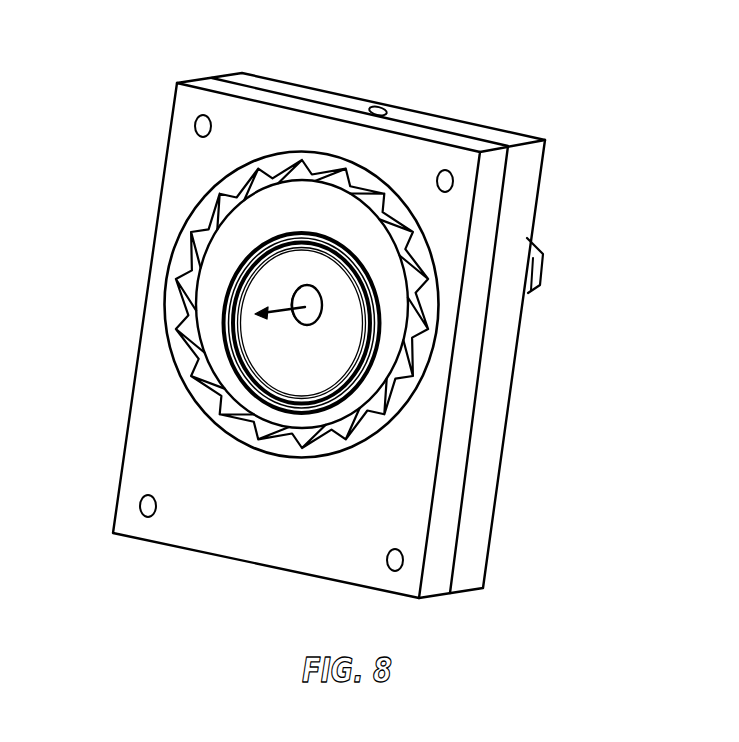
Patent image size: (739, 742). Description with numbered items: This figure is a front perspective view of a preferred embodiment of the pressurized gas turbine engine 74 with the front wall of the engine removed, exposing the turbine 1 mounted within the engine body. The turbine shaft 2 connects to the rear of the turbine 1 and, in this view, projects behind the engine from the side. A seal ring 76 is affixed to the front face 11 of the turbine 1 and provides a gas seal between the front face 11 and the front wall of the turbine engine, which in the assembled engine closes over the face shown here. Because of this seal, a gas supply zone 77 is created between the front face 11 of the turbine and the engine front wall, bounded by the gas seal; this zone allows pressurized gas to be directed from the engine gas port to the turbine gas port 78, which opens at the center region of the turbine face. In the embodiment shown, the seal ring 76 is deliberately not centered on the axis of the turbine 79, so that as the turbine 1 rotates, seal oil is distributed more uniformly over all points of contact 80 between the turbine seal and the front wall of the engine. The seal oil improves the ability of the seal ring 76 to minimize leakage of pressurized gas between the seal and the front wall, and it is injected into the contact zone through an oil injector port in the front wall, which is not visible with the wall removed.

The turbine 1 is at (248, 220).
The turbine shaft 2 is at (526, 291).
The front face 11 is at (212, 303).
The pressurized gas turbine engine 74 is at (177, 83).
The seal ring 76 is at (237, 267).
The gas supply zone 77 is at (265, 347).
The turbine gas port 78 is at (320, 306).
The axis of the turbine 79 is at (280, 316).
The points of contact 80 is at (368, 285).